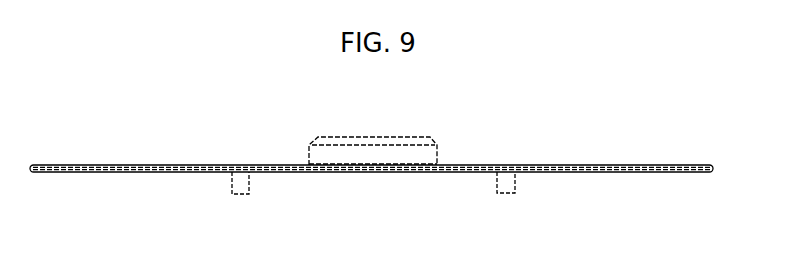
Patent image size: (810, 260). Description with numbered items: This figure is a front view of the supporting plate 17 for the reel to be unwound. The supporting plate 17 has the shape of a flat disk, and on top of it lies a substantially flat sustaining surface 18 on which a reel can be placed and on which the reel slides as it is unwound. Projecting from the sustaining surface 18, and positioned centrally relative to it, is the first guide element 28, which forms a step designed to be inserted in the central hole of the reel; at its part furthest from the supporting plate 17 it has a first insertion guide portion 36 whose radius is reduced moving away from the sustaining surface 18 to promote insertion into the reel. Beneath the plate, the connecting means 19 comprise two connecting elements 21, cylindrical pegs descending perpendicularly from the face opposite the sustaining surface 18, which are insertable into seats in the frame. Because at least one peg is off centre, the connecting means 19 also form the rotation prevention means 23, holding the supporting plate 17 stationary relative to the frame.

The supporting plate 17 is at (377, 117).
The sustaining surface 18 is at (157, 163).
The connecting means 19 is at (399, 215).
The connecting elements 21 is at (232, 187).
The rotation prevention means 23 is at (399, 215).
The first guide element 28 is at (420, 157).
The first insertion guide portion 36 is at (377, 93).